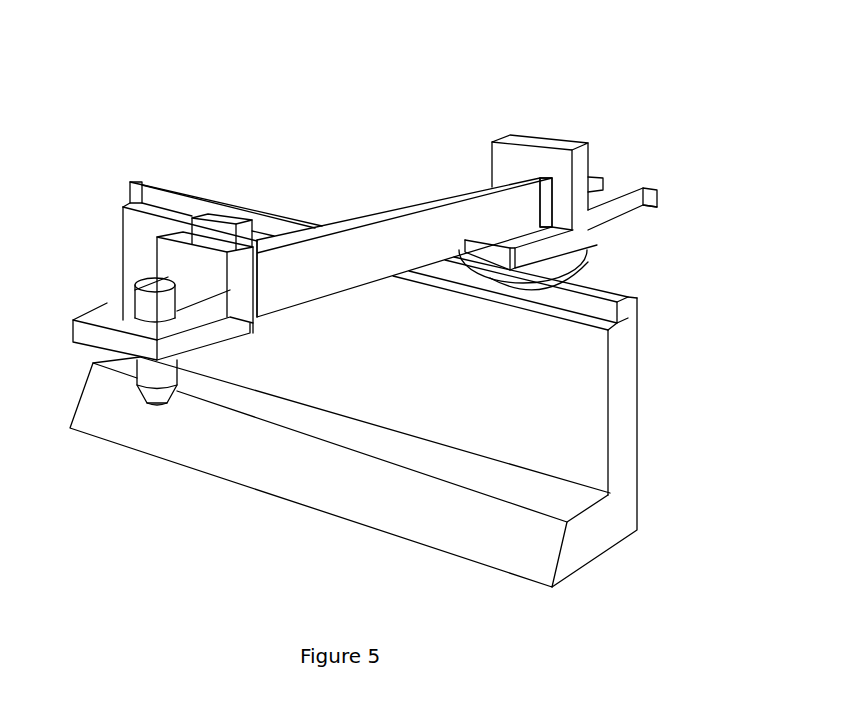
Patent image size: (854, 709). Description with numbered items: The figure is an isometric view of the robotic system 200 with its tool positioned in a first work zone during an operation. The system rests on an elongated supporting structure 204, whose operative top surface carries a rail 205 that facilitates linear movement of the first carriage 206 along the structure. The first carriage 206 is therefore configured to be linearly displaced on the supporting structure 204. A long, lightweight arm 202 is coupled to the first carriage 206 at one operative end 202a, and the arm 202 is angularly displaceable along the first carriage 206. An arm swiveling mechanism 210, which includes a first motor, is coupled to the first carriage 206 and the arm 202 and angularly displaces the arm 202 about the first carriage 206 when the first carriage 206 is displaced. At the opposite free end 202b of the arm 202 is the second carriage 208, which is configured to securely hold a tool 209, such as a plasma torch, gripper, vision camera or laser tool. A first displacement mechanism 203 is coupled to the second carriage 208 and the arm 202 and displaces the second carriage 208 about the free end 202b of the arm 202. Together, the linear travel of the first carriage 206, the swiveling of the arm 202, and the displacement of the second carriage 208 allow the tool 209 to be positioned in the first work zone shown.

The robotic system 200 is at (633, 48).
The arm 202 is at (357, 219).
The operative end of the arm 202a is at (540, 178).
The free end of the arm 202b is at (256, 245).
The first displacement mechanism 203 is at (215, 222).
The supporting structure 204 is at (590, 392).
The rail 205 is at (607, 314).
The first carriage 206 is at (545, 288).
The second carriage 208 is at (160, 262).
The tool 209 is at (143, 307).
The arm swiveling mechanism 210 is at (594, 255).